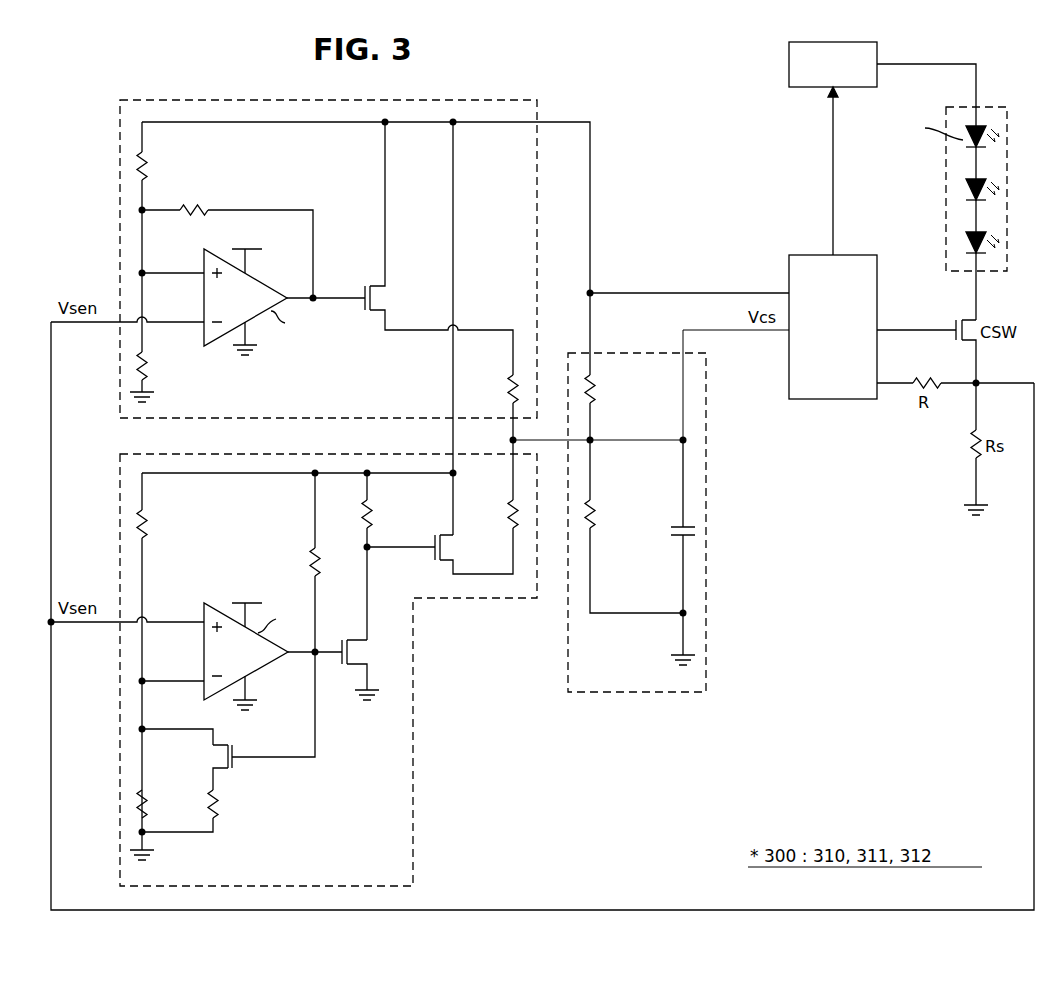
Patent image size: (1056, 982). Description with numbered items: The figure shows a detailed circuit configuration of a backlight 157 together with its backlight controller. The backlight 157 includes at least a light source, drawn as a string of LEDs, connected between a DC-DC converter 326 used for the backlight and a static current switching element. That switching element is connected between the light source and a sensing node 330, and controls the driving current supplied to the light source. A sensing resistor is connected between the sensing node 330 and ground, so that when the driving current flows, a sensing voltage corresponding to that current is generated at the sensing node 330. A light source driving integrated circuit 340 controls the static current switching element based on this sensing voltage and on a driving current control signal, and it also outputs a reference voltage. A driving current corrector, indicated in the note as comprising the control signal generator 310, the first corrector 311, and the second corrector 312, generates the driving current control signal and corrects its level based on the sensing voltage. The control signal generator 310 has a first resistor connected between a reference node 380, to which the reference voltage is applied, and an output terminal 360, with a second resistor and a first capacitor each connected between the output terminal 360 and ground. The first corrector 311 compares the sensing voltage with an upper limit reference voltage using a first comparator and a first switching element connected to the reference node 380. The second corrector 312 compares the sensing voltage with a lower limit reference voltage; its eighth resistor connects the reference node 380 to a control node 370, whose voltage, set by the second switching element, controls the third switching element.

The first corrector 311 is at (499, 100).
The second corrector 312 is at (455, 598).
The control signal generator 310 is at (636, 692).
The DC-DC converter 326 is at (789, 59).
The backlight 157 is at (946, 193).
The reference node 380 is at (597, 292).
The output terminal 360 is at (678, 450).
The control node 370 is at (372, 553).
The light source driving integrated circuit 340 is at (832, 399).
The sensing node 330 is at (982, 387).